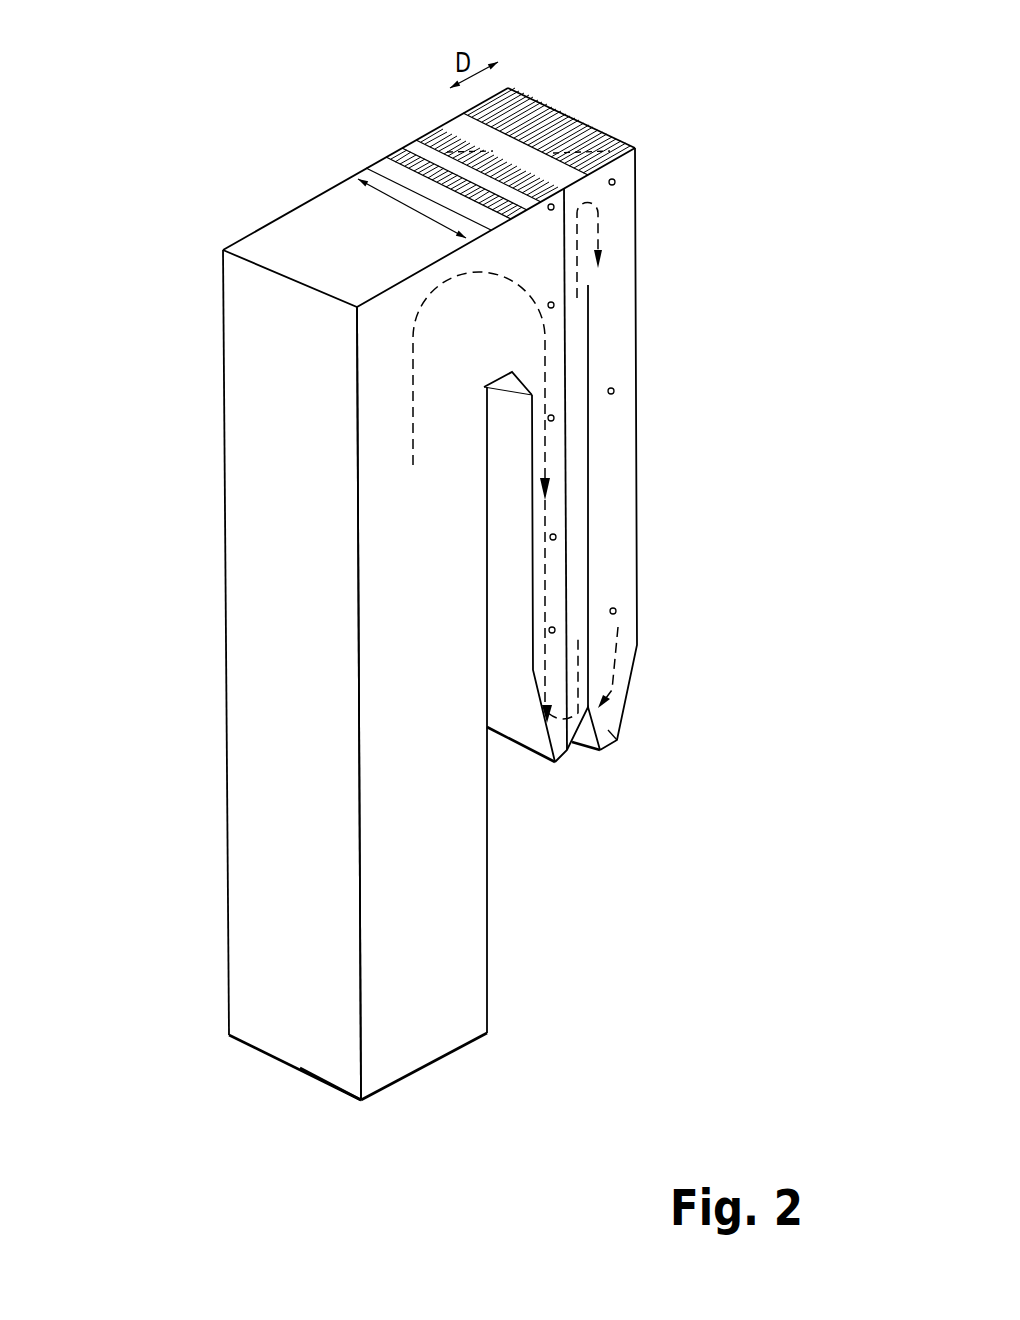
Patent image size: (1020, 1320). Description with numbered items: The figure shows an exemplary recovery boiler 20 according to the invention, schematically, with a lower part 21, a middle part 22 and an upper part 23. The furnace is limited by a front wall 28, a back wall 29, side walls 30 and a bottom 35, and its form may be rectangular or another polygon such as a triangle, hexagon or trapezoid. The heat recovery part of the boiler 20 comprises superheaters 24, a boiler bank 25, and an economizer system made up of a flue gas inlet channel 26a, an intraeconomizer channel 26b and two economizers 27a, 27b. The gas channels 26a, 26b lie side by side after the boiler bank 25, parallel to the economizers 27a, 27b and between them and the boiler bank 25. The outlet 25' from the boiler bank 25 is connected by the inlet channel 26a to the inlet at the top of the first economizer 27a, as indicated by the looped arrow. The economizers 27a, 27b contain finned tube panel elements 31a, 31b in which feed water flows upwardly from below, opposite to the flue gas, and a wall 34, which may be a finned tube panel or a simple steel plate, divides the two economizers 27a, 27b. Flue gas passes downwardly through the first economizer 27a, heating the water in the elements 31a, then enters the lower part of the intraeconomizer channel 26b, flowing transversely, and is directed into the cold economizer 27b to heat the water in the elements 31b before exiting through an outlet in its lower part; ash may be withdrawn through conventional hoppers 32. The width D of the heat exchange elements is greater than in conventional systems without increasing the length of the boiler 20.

The recovery boiler 20 is at (170, 199).
The lower part 21 is at (441, 975).
The middle part 22 is at (441, 862).
The upper part 23 is at (441, 591).
The superheaters 24 is at (471, 393).
The boiler bank 25 is at (484, 517).
The outlet 25' is at (588, 751).
The flue gas inlet channel 26a is at (575, 528).
The intraeconomizer channel 26b is at (468, 125).
The first economizer 27a is at (622, 355).
The second economizer 27b is at (506, 88).
The front wall 28 is at (285, 1047).
The back wall 29 is at (490, 930).
The side walls 30 is at (425, 1047).
The finned tube panel elements 31a is at (622, 140).
The finned tube panel elements 31b is at (553, 110).
The hoppers 32 is at (560, 762).
The wall 34 is at (585, 105).
The bottom 35 is at (328, 1085).